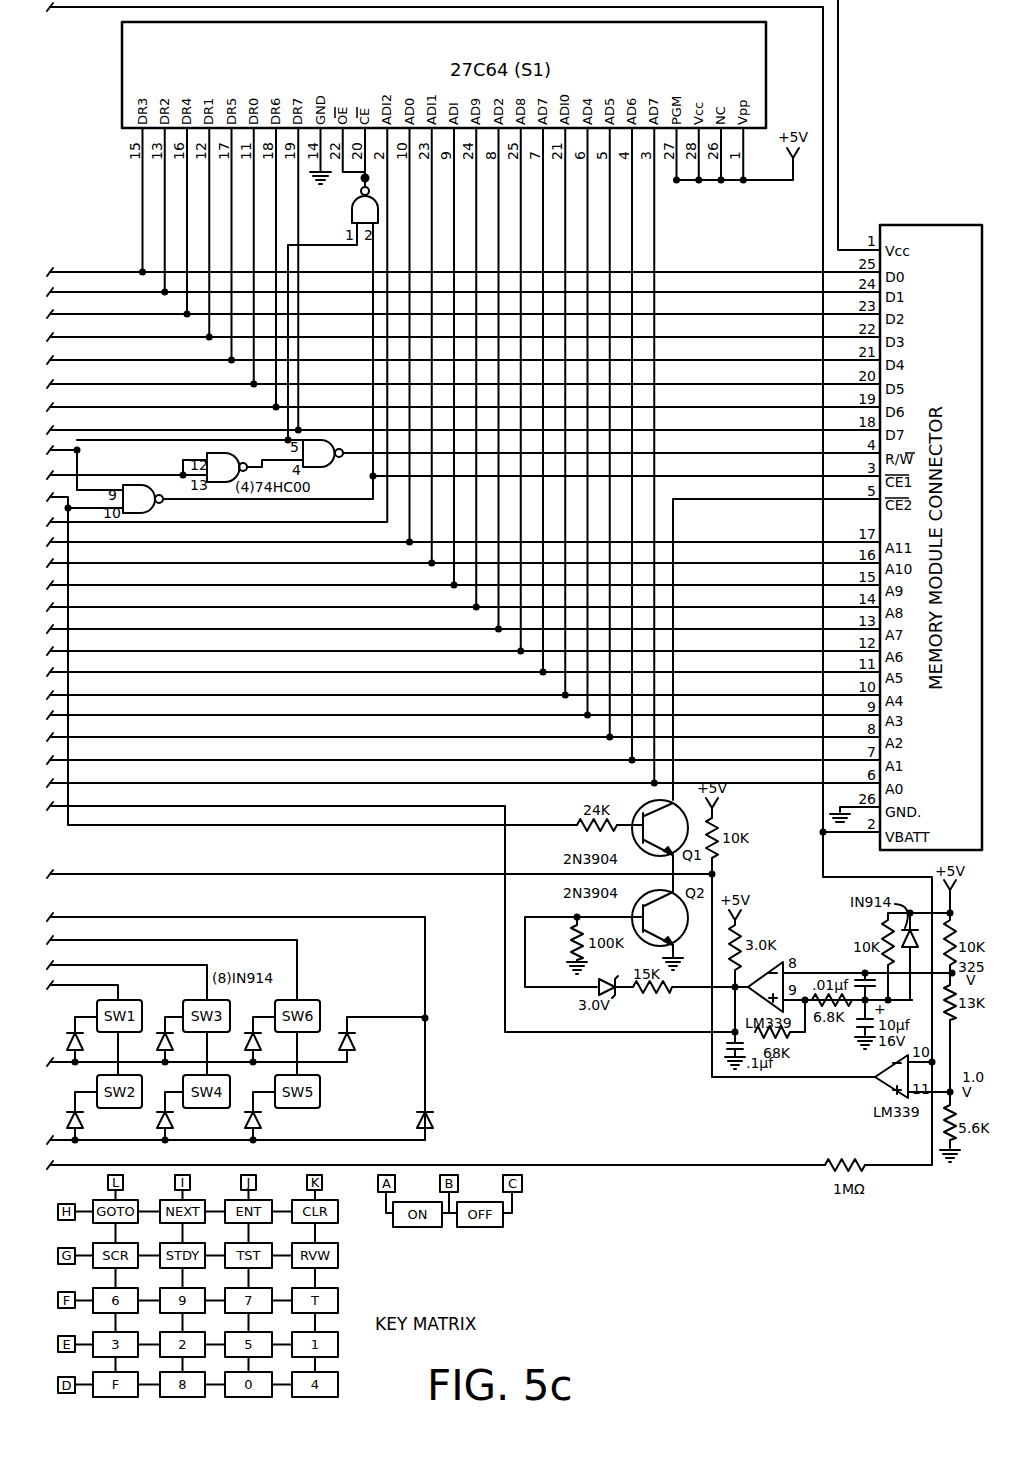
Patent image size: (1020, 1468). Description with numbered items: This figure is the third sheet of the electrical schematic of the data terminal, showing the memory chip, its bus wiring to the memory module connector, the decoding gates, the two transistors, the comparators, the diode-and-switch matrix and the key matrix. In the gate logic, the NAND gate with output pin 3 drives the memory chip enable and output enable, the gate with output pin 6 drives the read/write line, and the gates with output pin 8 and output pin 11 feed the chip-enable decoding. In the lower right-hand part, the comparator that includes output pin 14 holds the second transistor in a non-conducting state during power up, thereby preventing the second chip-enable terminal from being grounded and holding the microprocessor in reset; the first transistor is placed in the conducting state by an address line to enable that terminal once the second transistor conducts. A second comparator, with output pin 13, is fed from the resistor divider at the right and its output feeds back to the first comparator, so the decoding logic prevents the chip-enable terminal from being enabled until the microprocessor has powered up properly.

The NAND gate output 3 (chip enable gate) 3 is at (367, 199).
The NAND gate output 6 (read/write gate) 6 is at (323, 449).
The NAND gate output 8 is at (145, 497).
The NAND gate output 11 is at (231, 463).
The LM339 comparator output 13 is at (881, 1076).
The output pin 14 is at (760, 987).